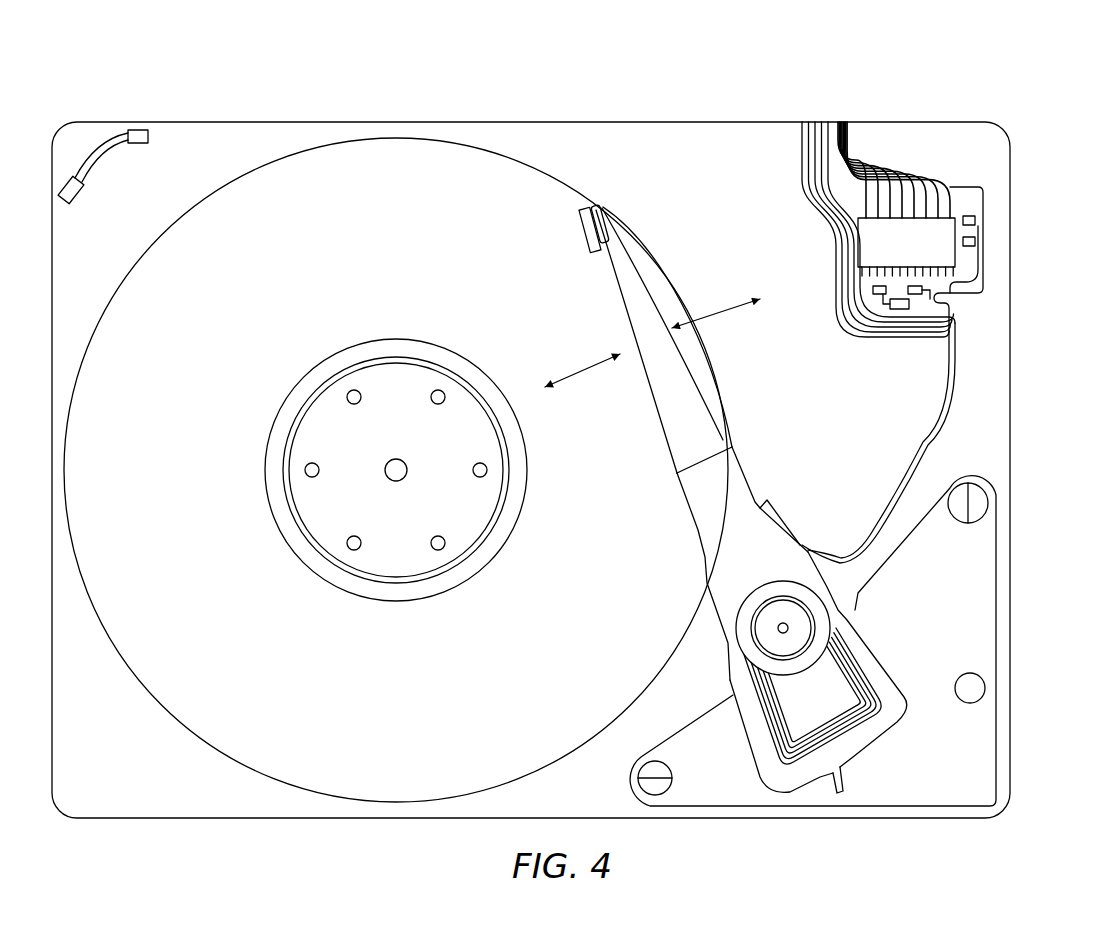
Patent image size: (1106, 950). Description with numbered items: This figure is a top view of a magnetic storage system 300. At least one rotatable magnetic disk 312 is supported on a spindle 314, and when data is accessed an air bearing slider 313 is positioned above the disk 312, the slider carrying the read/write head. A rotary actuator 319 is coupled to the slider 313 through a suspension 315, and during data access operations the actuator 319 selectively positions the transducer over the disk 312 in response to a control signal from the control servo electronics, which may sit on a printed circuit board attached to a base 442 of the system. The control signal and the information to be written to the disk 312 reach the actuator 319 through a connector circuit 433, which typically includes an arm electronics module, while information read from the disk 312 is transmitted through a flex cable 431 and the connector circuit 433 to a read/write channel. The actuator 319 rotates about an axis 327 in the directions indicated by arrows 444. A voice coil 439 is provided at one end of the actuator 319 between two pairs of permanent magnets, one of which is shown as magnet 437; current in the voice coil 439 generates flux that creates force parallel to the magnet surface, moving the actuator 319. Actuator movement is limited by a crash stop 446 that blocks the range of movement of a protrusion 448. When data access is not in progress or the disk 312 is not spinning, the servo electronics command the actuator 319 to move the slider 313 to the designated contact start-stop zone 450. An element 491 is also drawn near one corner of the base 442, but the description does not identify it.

The magnetic storage system 300 is at (645, 81).
The rotatable magnetic disk 312 is at (383, 765).
The air bearing slider 313 is at (592, 237).
The spindle 314 is at (478, 508).
The suspension 315 is at (672, 432).
The rotary actuator 319 is at (708, 557).
The axis 327 is at (783, 628).
The flex cable 431 is at (822, 113).
The connector circuit 433 is at (1044, 118).
The permanent magnet 437 is at (900, 725).
The voice coil 439 is at (807, 748).
The base 442 is at (133, 796).
The arrows 444 is at (716, 310).
The crash stop 446 is at (962, 672).
The protrusion 448 is at (852, 786).
The contact start-stop zone 450 is at (400, 595).
The latch 491 is at (98, 160).